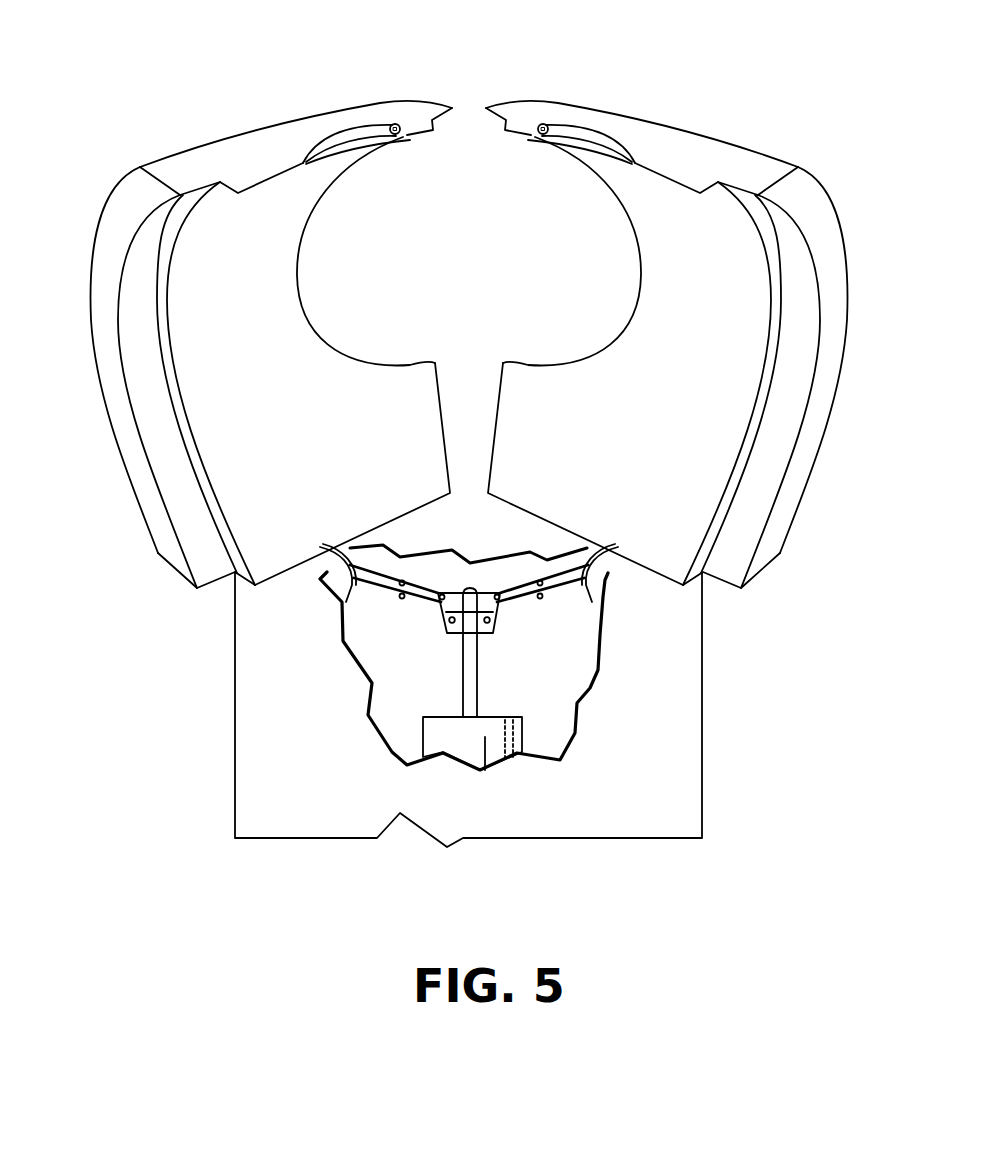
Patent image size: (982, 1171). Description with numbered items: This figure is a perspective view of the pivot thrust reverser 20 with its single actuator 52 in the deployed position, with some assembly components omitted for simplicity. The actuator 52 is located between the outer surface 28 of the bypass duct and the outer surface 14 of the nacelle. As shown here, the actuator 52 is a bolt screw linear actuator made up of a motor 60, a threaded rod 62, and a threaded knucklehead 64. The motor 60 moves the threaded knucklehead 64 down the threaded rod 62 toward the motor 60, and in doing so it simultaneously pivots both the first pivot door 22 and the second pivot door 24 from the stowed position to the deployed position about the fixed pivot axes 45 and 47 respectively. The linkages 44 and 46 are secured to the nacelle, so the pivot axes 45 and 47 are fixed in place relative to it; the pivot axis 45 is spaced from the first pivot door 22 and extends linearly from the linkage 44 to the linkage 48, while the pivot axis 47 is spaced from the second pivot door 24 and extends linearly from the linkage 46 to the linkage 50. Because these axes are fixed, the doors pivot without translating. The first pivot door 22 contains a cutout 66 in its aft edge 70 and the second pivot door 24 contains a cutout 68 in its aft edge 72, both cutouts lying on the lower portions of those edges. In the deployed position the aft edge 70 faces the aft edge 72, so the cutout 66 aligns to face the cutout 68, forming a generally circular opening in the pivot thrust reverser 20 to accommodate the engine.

The pivot thrust reverser 20 is at (193, 75).
The first pivot door 22 is at (787, 392).
The second pivot door 24 is at (148, 392).
The linkage 44 is at (572, 130).
The linkage 46 is at (363, 130).
The pivot axis 45 is at (548, 106).
The pivot axis 47 is at (388, 106).
The cutout 66 is at (617, 305).
The cutout 68 is at (303, 305).
The aft edge 70 is at (492, 420).
The aft edge 72 is at (446, 420).
The linkage 48 is at (593, 608).
The linkage 50 is at (340, 605).
The outer surface of nacelle 14 is at (369, 642).
The outer surface of bypass duct 28 is at (258, 778).
The motor 60 is at (437, 731).
The threaded rod 62 is at (467, 668).
The threaded knucklehead 64 is at (482, 630).
The actuator 52 is at (540, 716).